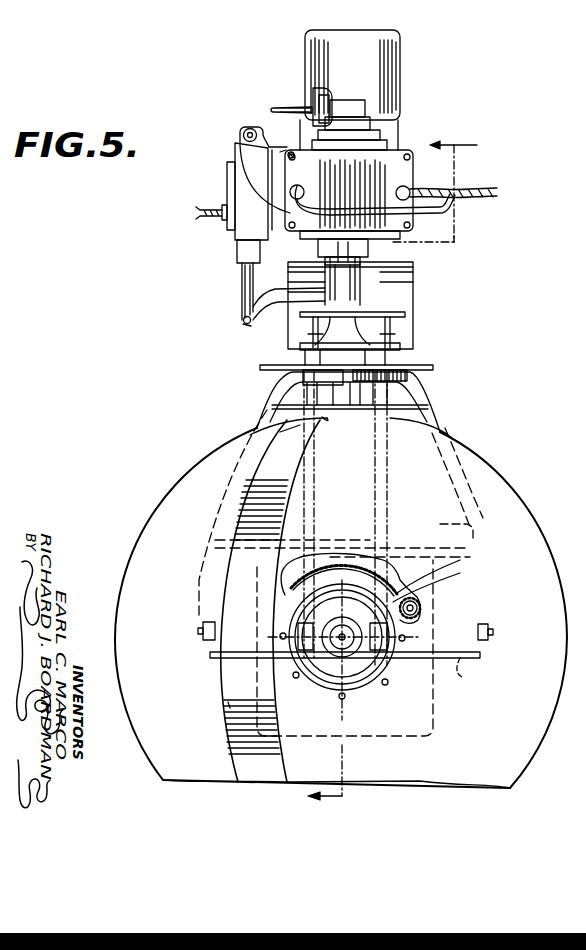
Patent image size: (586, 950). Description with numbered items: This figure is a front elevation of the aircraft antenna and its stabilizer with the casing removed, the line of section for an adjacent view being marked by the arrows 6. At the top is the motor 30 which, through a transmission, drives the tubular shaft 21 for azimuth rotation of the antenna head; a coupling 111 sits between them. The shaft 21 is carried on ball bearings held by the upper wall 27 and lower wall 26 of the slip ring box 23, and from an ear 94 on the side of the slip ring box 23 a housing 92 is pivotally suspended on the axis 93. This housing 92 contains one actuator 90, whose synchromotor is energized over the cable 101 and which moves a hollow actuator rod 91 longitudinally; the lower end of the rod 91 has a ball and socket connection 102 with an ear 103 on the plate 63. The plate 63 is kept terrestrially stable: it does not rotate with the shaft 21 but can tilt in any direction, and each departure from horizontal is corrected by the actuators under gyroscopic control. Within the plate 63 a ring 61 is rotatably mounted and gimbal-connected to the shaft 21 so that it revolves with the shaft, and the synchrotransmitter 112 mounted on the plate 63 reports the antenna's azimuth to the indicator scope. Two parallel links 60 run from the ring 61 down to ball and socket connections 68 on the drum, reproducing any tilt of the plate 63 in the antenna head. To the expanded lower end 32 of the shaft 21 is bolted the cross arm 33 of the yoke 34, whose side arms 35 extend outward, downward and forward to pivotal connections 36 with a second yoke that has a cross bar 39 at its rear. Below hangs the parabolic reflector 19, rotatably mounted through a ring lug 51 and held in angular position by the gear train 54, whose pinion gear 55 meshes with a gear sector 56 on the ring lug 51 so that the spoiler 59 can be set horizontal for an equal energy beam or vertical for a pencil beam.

The section line 6- 6 is at (401, 472).
The parabolic reflector 19 is at (536, 518).
The tubular shaft 21 is at (366, 260).
The slip ring box 23 is at (390, 180).
The lower wall of slip ring box 26 is at (452, 232).
The upper wall of slip ring box 27 is at (395, 150).
The motor 30 is at (402, 86).
The expanded lower end of shaft 32 is at (413, 352).
The cross arm 33 is at (288, 380).
The yoke 34 is at (470, 416).
The side arms of yoke 35 is at (238, 492).
The pivotal connections 36 is at (202, 640).
The cross bar 39 is at (355, 638).
The ring lug 51 is at (440, 570).
The gear train 54 is at (448, 590).
The pinion gear 55 is at (452, 605).
The gear sector 56 is at (375, 568).
The spoiler 59 is at (228, 706).
The parallel links 60 is at (314, 508).
The ring 61 is at (402, 326).
The plate 63 is at (412, 303).
The ball and socket universal joint connection 68 is at (300, 652).
The actuator 90 is at (218, 246).
The actuator rod 91 is at (241, 292).
The housing 92 is at (235, 184).
The axis 93 is at (251, 129).
The ear 94 is at (277, 152).
The cable 101 is at (205, 216).
The ball and socket connection 102 is at (241, 323).
The ear 103 is at (280, 310).
The coupling 111 is at (350, 100).
The synchrotransmitter 112 is at (398, 268).